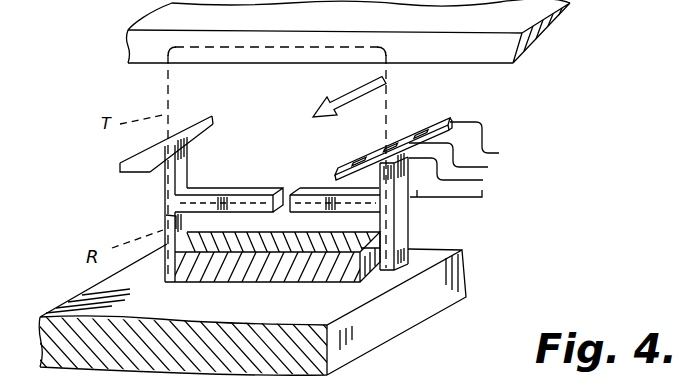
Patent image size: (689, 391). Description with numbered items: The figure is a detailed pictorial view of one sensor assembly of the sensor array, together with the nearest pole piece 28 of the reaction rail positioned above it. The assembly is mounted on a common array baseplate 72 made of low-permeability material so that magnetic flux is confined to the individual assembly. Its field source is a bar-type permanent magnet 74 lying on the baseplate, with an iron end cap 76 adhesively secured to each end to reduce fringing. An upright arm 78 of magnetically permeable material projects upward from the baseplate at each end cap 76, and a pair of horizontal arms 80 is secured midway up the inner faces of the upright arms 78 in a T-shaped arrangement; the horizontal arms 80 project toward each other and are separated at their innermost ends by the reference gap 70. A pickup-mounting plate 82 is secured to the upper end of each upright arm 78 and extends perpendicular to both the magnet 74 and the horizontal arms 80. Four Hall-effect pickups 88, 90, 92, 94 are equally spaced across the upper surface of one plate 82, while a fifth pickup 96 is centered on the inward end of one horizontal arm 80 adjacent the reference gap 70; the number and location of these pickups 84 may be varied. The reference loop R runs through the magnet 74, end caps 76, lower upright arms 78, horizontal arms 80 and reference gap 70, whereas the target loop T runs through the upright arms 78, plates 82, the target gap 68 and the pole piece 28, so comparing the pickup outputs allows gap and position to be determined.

The pole piece 28 is at (543, 36).
The target gap 68 is at (196, 89).
The reference gap 70 is at (280, 209).
The array baseplate 72 is at (372, 338).
The permanent magnet 74 is at (272, 266).
The end cap 76 is at (163, 275).
The upright arm 78 is at (162, 216).
The horizontal arm 80 is at (220, 196).
The pickup-mounting plate 82 is at (120, 166).
The pickups 84 is at (288, 193).
The fifth pickup 96 is at (310, 178).
The Hall-effect pickup 88 is at (441, 122).
The Hall-effect pickup 90 is at (410, 130).
The Hall-effect pickup 92 is at (383, 149).
The Hall-effect pickup 94 is at (358, 161).